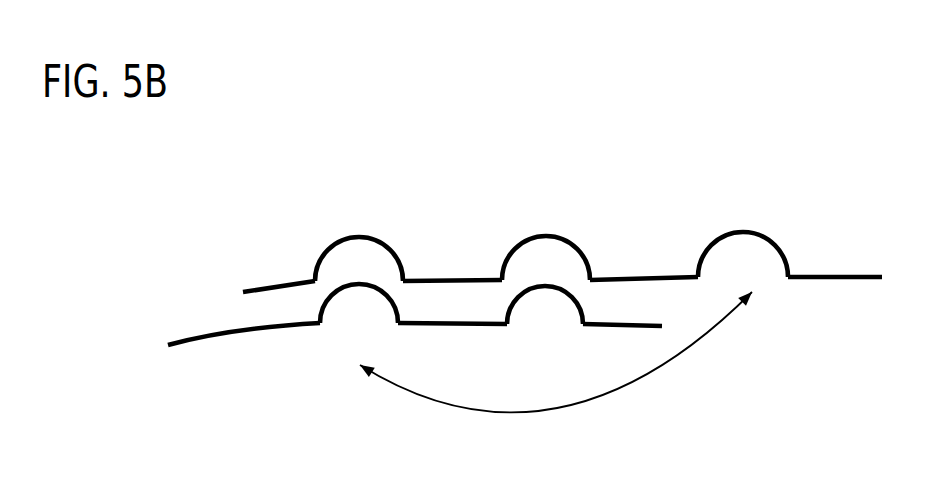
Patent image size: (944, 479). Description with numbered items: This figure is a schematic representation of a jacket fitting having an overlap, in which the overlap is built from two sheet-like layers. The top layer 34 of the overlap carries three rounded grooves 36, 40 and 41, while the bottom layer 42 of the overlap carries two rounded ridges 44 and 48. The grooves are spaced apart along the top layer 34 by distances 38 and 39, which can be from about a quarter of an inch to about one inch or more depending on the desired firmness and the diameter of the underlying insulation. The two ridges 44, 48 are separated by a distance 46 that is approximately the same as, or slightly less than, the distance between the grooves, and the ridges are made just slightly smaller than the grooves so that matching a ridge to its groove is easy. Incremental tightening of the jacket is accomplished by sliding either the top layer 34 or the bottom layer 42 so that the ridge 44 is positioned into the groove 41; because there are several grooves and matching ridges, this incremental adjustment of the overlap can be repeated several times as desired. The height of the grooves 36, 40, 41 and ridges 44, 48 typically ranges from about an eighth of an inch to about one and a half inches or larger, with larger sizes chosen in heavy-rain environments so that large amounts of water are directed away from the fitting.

The top layer of overlap 34 is at (839, 268).
The groove 36 is at (363, 237).
The distance between grooves 38 is at (447, 281).
The distance between grooves 39 is at (647, 278).
The groove 40 is at (545, 234).
The groove 41 is at (745, 233).
The bottom layer of overlap 42 is at (188, 337).
The ridge 44 is at (357, 297).
The distance between ridges 46 is at (452, 325).
The ridge 48 is at (547, 297).